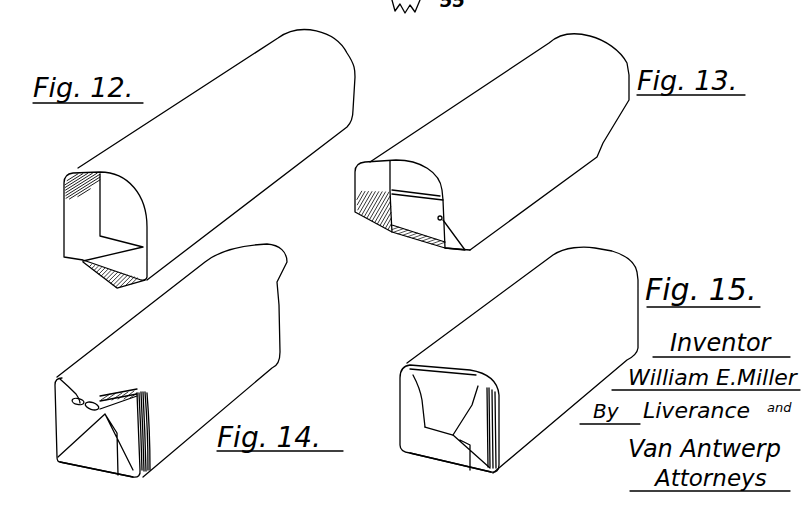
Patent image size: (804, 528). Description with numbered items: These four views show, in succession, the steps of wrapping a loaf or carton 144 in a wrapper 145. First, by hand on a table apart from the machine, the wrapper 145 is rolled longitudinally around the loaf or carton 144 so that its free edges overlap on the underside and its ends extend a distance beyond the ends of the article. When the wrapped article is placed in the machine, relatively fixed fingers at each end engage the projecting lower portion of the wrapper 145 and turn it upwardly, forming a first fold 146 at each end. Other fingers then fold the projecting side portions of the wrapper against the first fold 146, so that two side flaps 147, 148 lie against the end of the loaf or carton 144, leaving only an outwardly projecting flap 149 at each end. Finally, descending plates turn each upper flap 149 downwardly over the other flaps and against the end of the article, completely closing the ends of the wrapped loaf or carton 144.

In FIG. 12, the loaf or carton 144 is at (107, 210).
In FIG. 13, the loaf or carton 144 is at (398, 175).
In FIG. 12, the wrapper 145 is at (183, 110).
In FIG. 13, the wrapper 145 is at (440, 122).
In FIG. 14, the wrapper 145 is at (233, 330).
In FIG. 15, the wrapper 145 is at (492, 307).
In FIG. 13, the first fold 146 is at (420, 218).
In FIG. 14, the first fold 146 is at (95, 448).
In FIG. 15, the first fold 146 is at (443, 445).
In FIG. 14, the side flap 147 is at (118, 427).
In FIG. 15, the side flap 147 is at (473, 423).
In FIG. 14, the side flap 148 is at (82, 420).
In FIG. 15, the side flap 148 is at (417, 415).
In FIG. 14, the outwardly projecting flap 149 is at (90, 390).
In FIG. 15, the outwardly projecting flap 149 is at (440, 396).